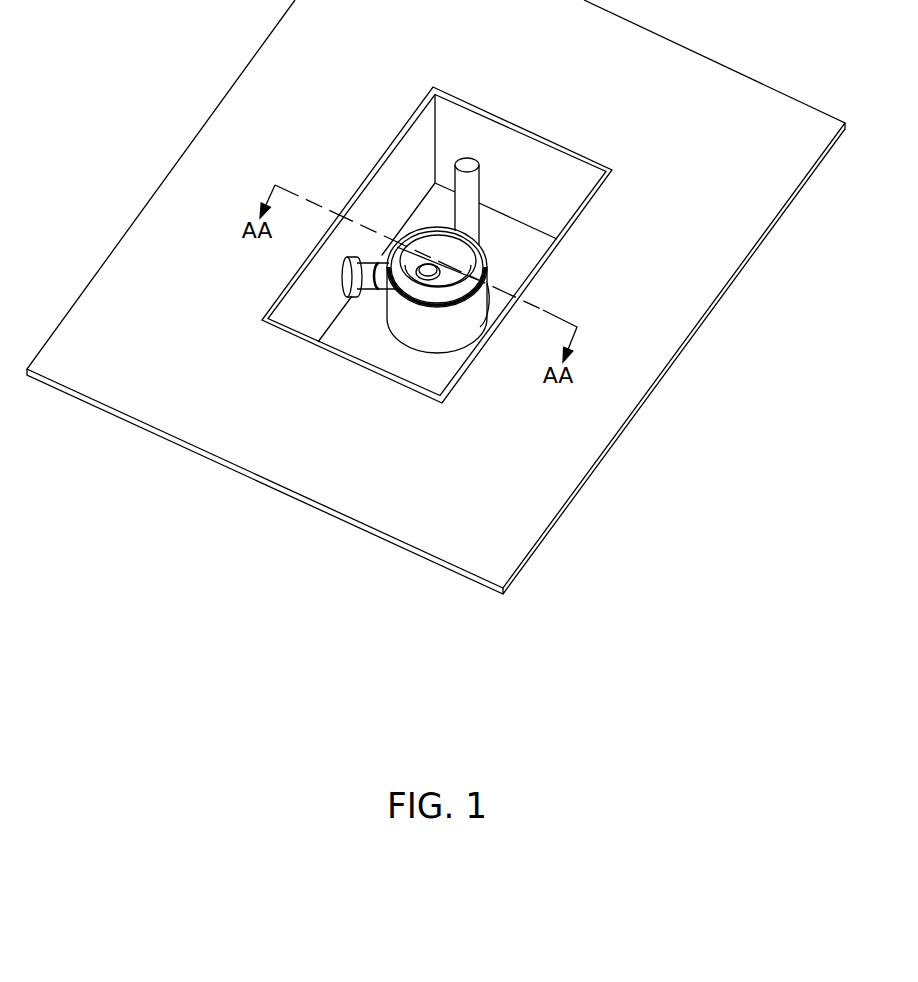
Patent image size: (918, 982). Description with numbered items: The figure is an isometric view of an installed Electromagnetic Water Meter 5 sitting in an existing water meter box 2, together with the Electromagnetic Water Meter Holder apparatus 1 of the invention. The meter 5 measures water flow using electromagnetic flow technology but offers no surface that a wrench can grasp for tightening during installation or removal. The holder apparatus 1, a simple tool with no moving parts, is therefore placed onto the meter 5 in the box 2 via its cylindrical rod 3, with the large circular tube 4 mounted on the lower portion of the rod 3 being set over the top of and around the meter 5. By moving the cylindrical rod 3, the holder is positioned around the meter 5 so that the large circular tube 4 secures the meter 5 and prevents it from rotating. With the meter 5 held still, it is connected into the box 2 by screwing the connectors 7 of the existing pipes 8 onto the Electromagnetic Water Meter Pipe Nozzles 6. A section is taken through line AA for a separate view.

The Electromagnetic Water Meter Holder apparatus 1 is at (498, 242).
The water meter box 2 is at (230, 87).
The cylindrical rod 3 is at (480, 185).
The large circular tube 4 is at (410, 312).
The Electromagnetic Water Meter 5 is at (438, 345).
The Electromagnetic Water Meter Pipe Nozzles 6 is at (402, 317).
The connectors 7 is at (370, 272).
The existing pipes 8 is at (348, 262).